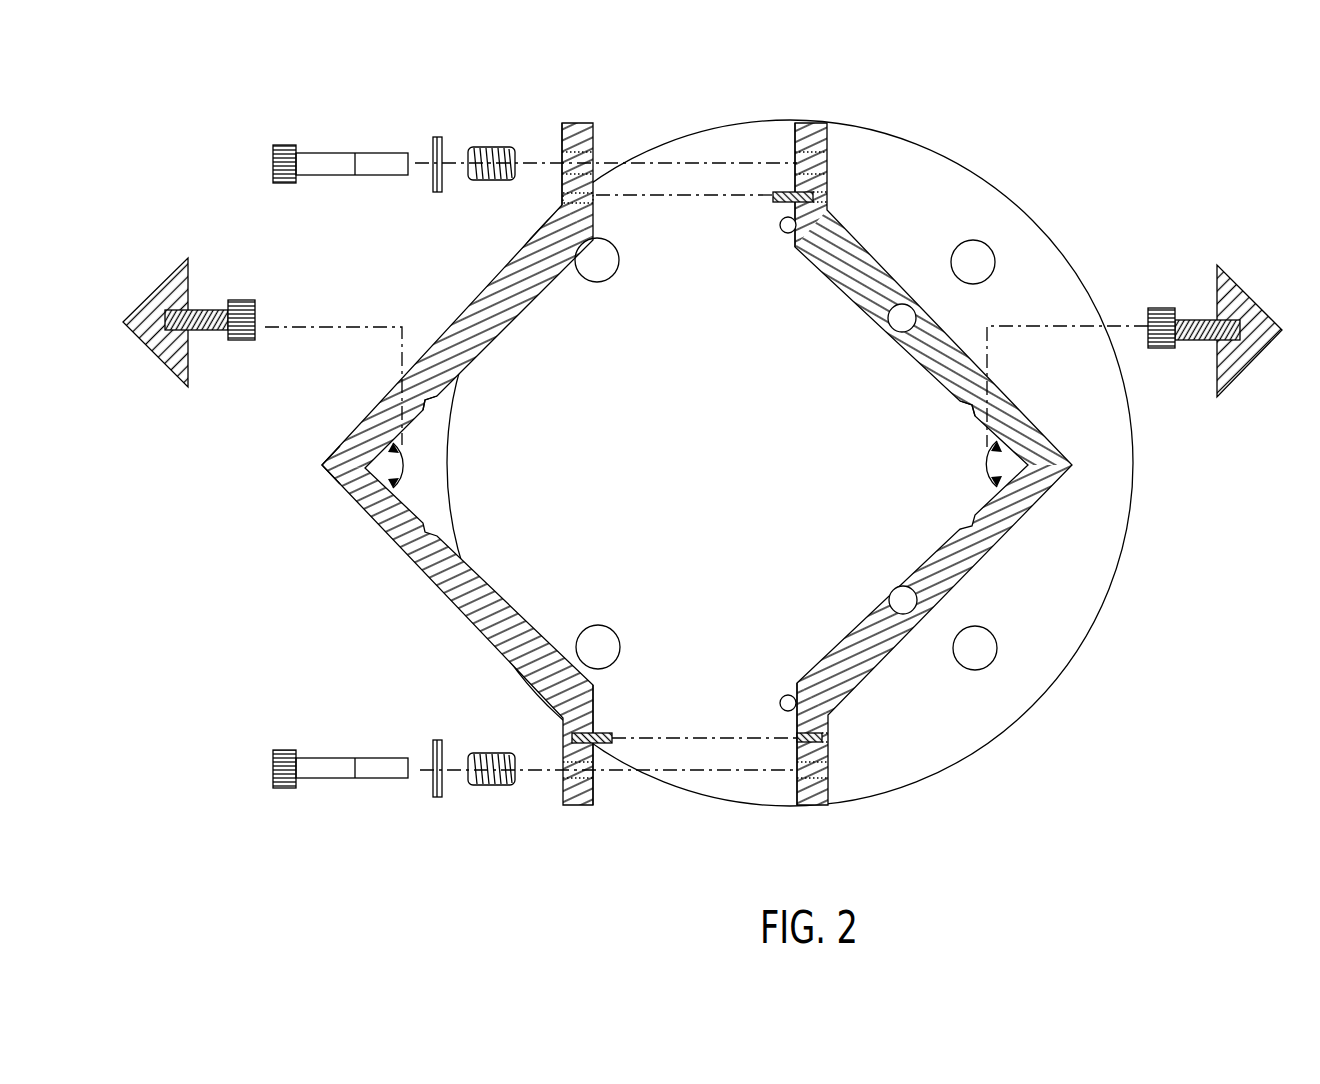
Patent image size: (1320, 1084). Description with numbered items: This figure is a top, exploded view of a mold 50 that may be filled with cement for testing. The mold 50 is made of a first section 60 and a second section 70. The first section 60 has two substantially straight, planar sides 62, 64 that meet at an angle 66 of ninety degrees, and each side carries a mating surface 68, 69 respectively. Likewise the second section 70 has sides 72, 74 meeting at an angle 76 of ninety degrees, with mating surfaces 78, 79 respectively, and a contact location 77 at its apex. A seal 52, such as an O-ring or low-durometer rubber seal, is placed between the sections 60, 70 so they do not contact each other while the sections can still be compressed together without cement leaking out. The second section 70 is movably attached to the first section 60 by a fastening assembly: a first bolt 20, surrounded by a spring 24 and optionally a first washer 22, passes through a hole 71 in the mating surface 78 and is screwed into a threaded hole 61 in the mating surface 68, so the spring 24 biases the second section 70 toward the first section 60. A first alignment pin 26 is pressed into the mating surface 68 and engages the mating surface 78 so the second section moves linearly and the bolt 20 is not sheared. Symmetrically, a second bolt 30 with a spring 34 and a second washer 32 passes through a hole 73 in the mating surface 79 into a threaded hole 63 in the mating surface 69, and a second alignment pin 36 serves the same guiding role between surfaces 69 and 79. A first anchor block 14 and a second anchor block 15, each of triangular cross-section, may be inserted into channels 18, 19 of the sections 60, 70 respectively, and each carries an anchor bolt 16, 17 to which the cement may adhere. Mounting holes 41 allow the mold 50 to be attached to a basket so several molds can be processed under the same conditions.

The first anchor block 14 is at (1238, 287).
The second anchor block 15 is at (177, 275).
The anchor bolt 16 is at (1155, 308).
The anchor bolt 17 is at (207, 308).
The channel 18 is at (973, 415).
The channel 19 is at (412, 408).
The first bolt 20 is at (348, 152).
The first washer 22 is at (433, 142).
The spring 24 is at (500, 147).
The first alignment pin 26 is at (773, 198).
The second bolt 30 is at (348, 758).
The second washer 32 is at (433, 748).
The spring 34 is at (500, 753).
The second alignment pin 36 is at (601, 739).
The mounting hole 41 is at (608, 262).
The mold 50 is at (801, 489).
The seal 52 is at (787, 235).
The first section 60 is at (897, 448).
The threaded hole 61 is at (829, 150).
The side 62 is at (877, 290).
The threaded hole 63 is at (828, 777).
The side 64 is at (1015, 527).
The angle 66 is at (985, 470).
The mating surface 68 is at (795, 153).
The mating surface 69 is at (797, 783).
The second section 70 is at (465, 448).
The hole 71 is at (594, 150).
The side 72 is at (490, 308).
The hole 73 is at (563, 780).
The side 74 is at (417, 543).
The angle 76 is at (405, 470).
The contact location 77 is at (322, 465).
The mating surface 78 is at (562, 153).
The mating surface 79 is at (597, 773).